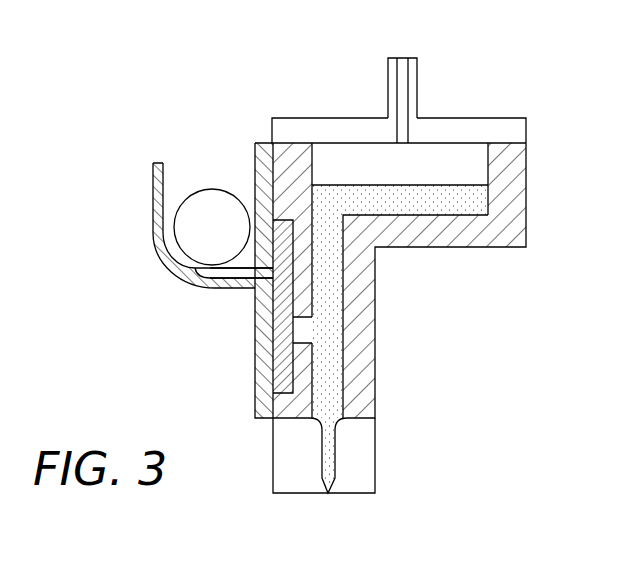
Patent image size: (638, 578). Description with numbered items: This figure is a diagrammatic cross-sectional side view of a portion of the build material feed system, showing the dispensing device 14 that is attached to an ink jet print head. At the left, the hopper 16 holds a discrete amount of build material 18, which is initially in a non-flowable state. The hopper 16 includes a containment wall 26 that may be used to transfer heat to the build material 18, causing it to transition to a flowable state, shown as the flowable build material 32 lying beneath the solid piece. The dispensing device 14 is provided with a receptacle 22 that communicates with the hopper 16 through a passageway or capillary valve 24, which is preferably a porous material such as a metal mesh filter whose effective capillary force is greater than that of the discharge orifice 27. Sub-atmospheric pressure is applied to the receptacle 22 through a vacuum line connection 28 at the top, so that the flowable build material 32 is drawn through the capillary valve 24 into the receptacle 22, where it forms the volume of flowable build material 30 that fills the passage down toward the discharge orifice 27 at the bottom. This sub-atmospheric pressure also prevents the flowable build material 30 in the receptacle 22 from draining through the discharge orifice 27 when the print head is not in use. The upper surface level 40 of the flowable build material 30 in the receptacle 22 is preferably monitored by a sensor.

The dispensing device 14 is at (456, 249).
The hopper 16 is at (186, 162).
The build material 18 is at (212, 189).
The receptacle 22 is at (450, 160).
The capillary valve 24 is at (276, 318).
The containment wall 26 is at (153, 212).
The discharge orifice 27 is at (328, 493).
The vacuum line connection 28 is at (402, 57).
The flowable build material 30 is at (355, 190).
The flowable build material 32 is at (222, 279).
The upper surface level 40 is at (470, 183).